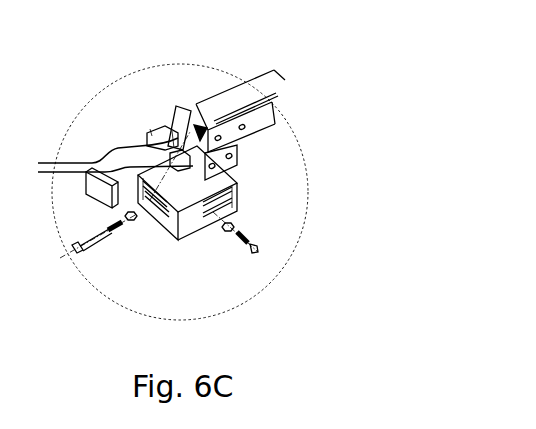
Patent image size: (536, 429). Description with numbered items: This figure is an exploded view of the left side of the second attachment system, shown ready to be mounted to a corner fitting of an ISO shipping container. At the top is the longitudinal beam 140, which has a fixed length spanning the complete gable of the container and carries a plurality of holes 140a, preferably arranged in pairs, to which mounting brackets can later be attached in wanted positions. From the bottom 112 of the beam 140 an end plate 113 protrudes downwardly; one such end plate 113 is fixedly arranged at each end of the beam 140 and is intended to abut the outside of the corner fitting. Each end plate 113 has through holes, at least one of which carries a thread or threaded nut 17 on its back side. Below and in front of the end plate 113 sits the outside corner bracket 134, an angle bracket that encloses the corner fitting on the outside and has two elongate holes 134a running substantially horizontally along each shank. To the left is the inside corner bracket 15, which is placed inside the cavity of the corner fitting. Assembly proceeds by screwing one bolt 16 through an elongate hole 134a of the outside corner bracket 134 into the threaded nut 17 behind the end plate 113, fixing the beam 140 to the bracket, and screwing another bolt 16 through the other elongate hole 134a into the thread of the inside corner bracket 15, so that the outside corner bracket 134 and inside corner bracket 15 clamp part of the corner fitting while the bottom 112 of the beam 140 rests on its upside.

The inside corner bracket 15 is at (167, 123).
The bolt 16 is at (74, 247).
The threaded nut 17 is at (101, 160).
The bottom of the beam 112 is at (199, 128).
The end plate 113 is at (237, 153).
The outside corner bracket 134 is at (238, 196).
The elongate holes 134a is at (163, 222).
The longitudinal beam 140 is at (242, 93).
The holes 140a is at (248, 121).